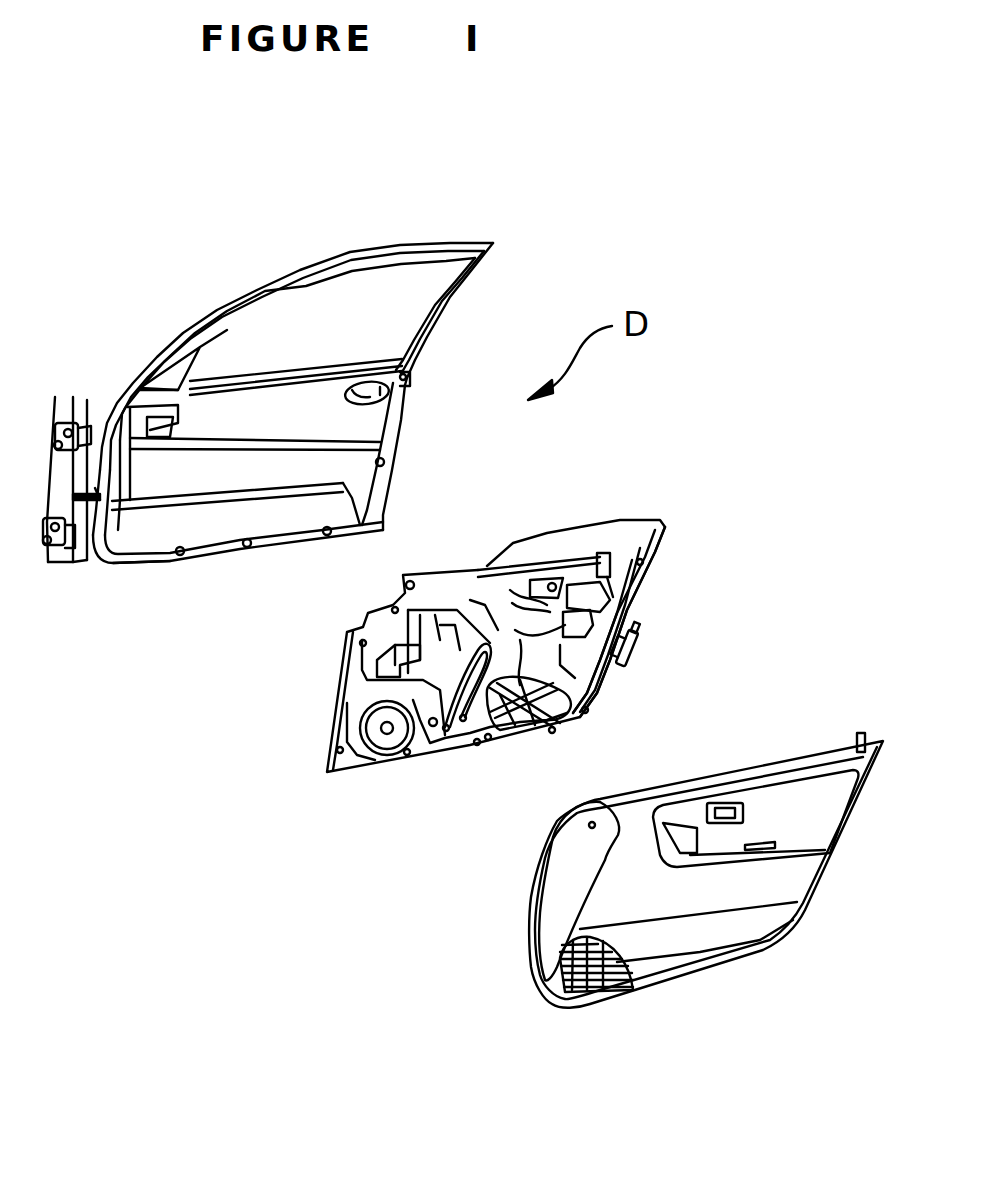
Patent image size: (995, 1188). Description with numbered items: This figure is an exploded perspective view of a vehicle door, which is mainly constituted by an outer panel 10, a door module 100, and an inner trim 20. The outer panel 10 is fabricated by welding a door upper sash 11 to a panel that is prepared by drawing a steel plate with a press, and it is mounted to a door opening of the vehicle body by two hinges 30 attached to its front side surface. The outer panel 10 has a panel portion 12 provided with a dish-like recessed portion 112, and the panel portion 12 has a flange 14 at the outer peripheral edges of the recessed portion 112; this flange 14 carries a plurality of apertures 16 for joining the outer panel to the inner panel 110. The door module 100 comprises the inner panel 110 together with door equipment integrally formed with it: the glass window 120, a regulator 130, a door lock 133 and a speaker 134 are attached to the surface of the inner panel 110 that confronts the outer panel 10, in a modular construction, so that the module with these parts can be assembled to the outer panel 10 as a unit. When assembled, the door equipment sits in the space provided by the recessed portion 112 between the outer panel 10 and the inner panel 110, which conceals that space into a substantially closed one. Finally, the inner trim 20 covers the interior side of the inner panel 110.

The outer panel 10 is at (171, 335).
The door upper sash 11 is at (447, 300).
The panel portion 12 is at (408, 404).
The flange 14 is at (122, 562).
The apertures 16 is at (263, 547).
The inner trim 20 is at (797, 877).
The hinges 30 is at (53, 420).
The door module 100 is at (323, 737).
The inner panel 110 is at (360, 688).
The recessed portion 112 is at (185, 483).
The glass window 120 is at (662, 527).
The regulator 130 is at (511, 710).
The door lock 133 is at (640, 643).
The speaker 134 is at (383, 743).